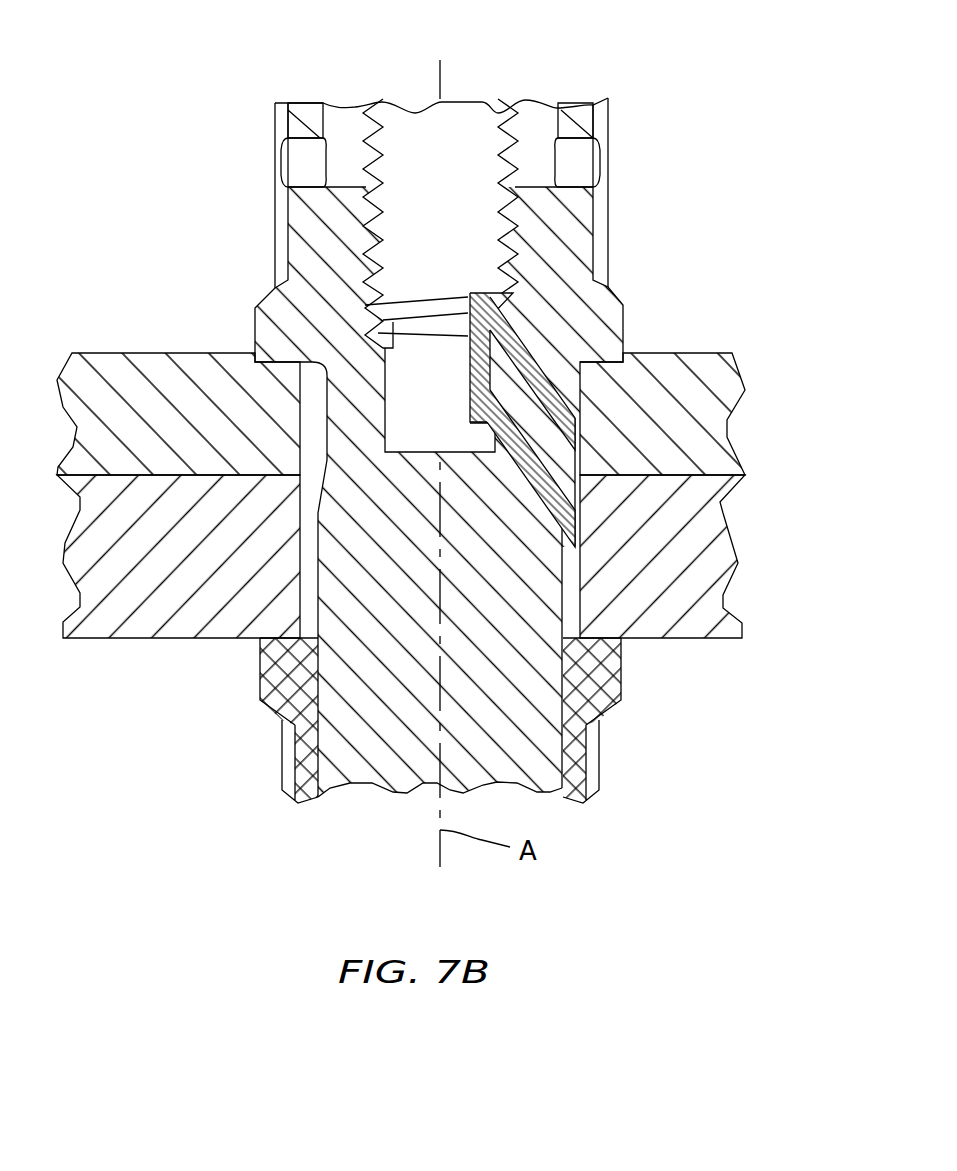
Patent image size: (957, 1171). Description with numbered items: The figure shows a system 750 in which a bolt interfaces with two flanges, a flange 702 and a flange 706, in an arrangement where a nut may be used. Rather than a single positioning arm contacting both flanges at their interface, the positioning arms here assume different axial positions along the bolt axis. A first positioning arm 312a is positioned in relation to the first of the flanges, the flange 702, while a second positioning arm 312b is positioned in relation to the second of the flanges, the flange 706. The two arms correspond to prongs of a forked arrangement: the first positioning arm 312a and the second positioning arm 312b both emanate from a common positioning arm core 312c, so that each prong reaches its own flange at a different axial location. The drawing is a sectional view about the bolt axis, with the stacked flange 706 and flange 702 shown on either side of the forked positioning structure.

The system 750 is at (700, 98).
The flange 706 is at (152, 377).
The flange 702 is at (145, 613).
The first positioning arm 312a is at (512, 470).
The second positioning arm 312b is at (572, 365).
The positioning arm core 312c is at (522, 328).